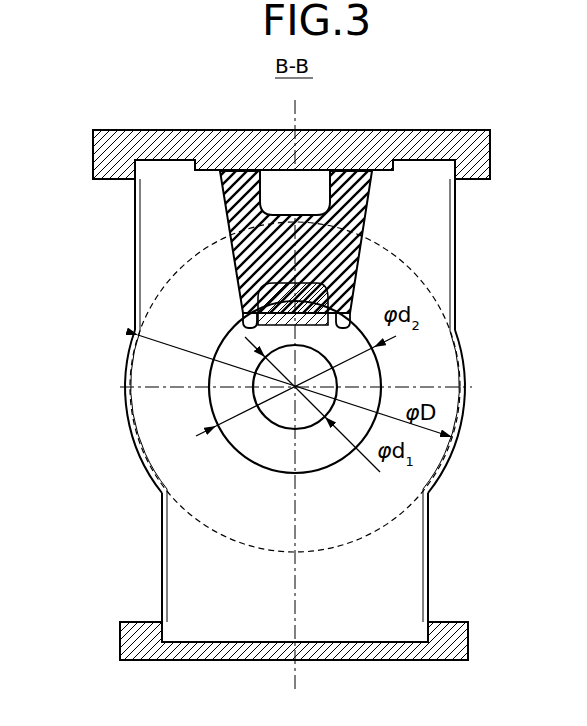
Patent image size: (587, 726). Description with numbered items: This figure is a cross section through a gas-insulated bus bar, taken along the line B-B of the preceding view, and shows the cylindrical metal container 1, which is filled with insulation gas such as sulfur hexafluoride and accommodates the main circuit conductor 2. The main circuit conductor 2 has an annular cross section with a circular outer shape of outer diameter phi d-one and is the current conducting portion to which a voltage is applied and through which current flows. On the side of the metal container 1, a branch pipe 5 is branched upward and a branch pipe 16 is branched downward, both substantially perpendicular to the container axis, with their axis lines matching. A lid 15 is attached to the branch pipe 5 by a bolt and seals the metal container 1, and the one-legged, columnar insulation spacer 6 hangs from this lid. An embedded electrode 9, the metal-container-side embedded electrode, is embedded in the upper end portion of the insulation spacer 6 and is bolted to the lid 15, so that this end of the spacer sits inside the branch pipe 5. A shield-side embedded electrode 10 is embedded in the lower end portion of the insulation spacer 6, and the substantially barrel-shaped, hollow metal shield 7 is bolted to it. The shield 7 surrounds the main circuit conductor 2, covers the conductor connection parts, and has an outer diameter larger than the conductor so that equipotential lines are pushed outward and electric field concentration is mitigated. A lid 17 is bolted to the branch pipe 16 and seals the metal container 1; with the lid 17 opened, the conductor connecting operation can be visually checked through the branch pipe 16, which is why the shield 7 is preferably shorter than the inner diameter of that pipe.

The metal container 1 is at (323, 400).
The main circuit conductor 2 is at (313, 425).
The branch pipe 5 is at (456, 252).
The insulation spacer 6 is at (217, 259).
The shield 7 is at (243, 461).
The embedded electrode 9 is at (305, 176).
The embedded electrode 10 is at (240, 322).
The lid 15 is at (450, 140).
The branch pipe 16 is at (428, 577).
The lid 17 is at (445, 661).